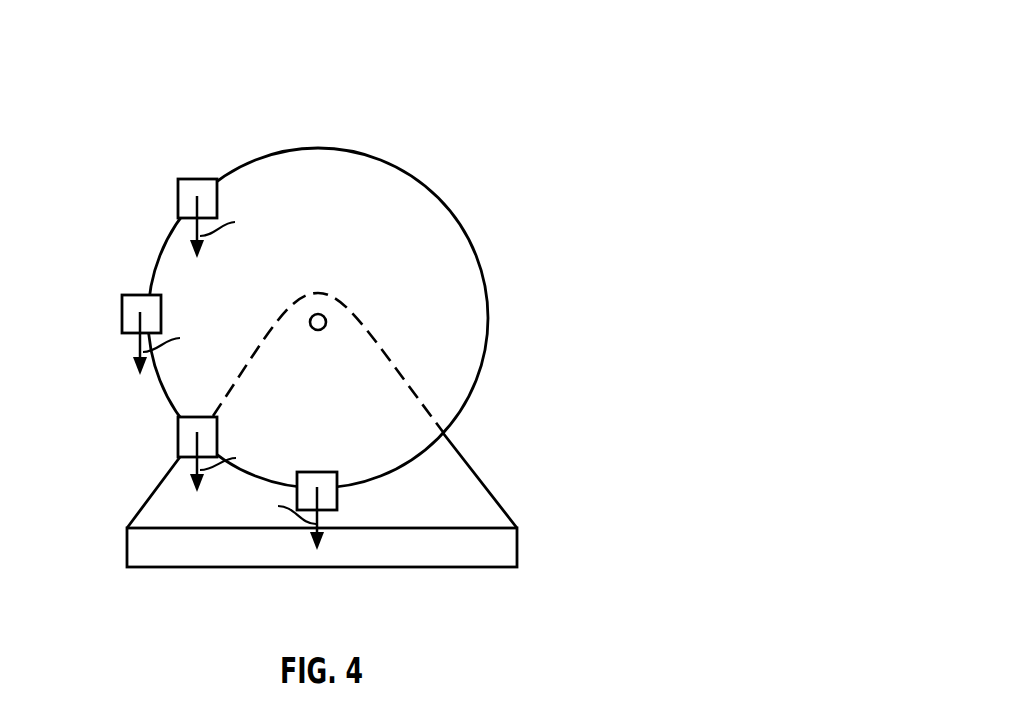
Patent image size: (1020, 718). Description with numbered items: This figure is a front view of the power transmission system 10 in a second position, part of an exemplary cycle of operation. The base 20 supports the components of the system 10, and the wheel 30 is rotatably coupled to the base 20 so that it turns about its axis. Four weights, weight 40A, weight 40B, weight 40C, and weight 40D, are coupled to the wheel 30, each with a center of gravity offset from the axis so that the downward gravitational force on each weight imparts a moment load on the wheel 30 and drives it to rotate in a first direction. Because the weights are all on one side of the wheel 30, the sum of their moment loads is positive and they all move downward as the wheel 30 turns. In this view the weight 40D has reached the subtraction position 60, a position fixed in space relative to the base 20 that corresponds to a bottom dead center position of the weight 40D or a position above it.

The system 10 is at (594, 42).
The base 20 is at (481, 475).
The wheel 30 is at (479, 255).
The weight 40A is at (197, 179).
The weight 40B is at (138, 295).
The weight 40C is at (178, 442).
The weight 40D is at (337, 485).
The subtraction position 60 is at (318, 450).